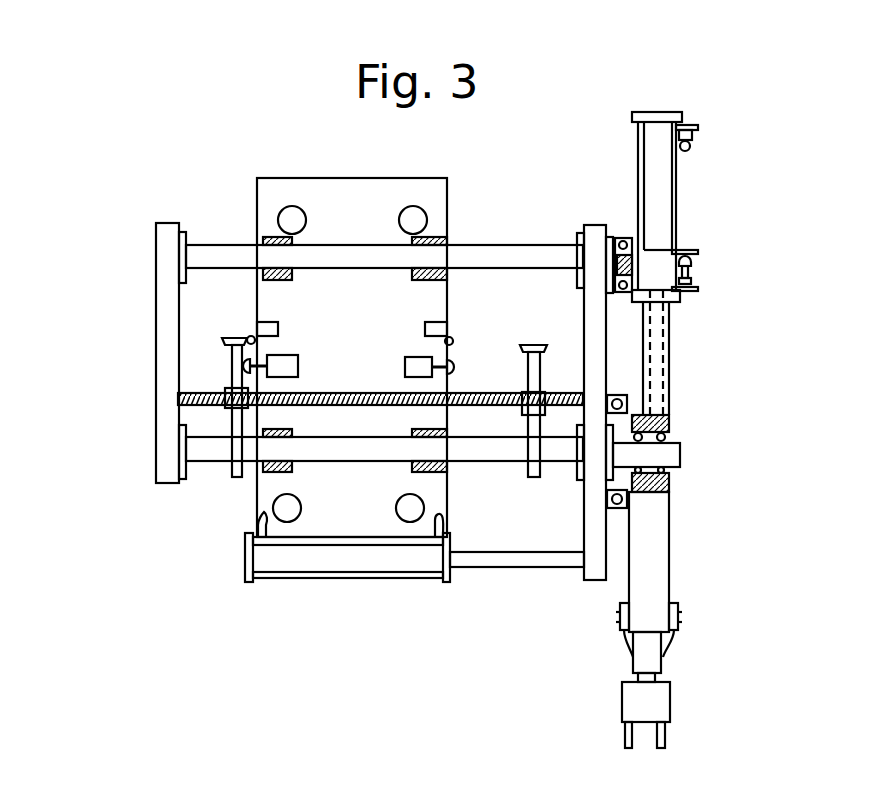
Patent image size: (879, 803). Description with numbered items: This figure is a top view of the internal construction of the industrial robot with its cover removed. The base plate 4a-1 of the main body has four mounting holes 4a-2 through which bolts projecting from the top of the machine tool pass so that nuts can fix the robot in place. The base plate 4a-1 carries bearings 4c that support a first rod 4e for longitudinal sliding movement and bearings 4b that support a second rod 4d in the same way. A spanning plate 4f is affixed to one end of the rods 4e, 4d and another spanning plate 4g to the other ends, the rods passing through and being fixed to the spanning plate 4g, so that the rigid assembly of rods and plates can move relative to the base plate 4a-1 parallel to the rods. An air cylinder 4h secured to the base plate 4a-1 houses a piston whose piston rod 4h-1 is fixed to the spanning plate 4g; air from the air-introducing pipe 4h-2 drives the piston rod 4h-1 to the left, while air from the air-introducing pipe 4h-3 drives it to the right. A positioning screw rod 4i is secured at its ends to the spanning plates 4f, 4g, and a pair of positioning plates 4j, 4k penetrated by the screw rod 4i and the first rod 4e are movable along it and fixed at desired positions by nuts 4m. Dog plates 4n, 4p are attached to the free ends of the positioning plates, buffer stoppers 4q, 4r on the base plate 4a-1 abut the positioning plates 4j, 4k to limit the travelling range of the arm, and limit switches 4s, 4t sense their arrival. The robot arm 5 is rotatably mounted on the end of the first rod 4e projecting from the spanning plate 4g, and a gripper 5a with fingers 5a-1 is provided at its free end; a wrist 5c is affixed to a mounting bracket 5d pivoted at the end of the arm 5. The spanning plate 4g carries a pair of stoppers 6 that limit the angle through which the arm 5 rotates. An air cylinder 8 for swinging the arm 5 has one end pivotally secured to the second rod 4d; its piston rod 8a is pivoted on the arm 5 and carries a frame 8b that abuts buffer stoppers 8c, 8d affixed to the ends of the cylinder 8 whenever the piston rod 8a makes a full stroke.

The base plate 4a-1 is at (448, 198).
The mounting holes 4a-2 is at (298, 207).
The bearings 4b is at (262, 237).
The bearings 4c is at (272, 472).
The second rod 4d is at (527, 258).
The first rod 4e is at (188, 455).
The spanning plate 4f is at (160, 383).
The spanning plate 4g is at (595, 232).
The air cylinder 4h is at (348, 580).
The piston rod 4h-1 is at (523, 563).
The air-introducing pipe 4h-2 is at (440, 525).
The air-introducing pipe 4h-3 is at (257, 518).
The positioning screw rod 4i is at (162, 428).
The positioning plate 4j is at (208, 455).
The positioning plate 4k is at (538, 478).
The nuts 4m is at (232, 390).
The dog plate 4n is at (232, 338).
The dog plate 4p is at (532, 345).
The buffer stopper 4q is at (292, 357).
The buffer stopper 4r is at (410, 358).
The limit switch 4s is at (273, 322).
The limit switch 4t is at (425, 322).
The robot arm 5 is at (655, 545).
The gripper 5a is at (660, 703).
The fingers 5a-1 is at (663, 748).
The wrist 5c is at (660, 665).
The mounting bracket 5d is at (678, 640).
The stoppers 6 is at (627, 405).
The air cylinder 8 is at (660, 185).
The piston rod 8a is at (655, 330).
The frame 8b is at (670, 365).
The buffer stopper 8c is at (698, 278).
The buffer stopper 8d is at (700, 130).